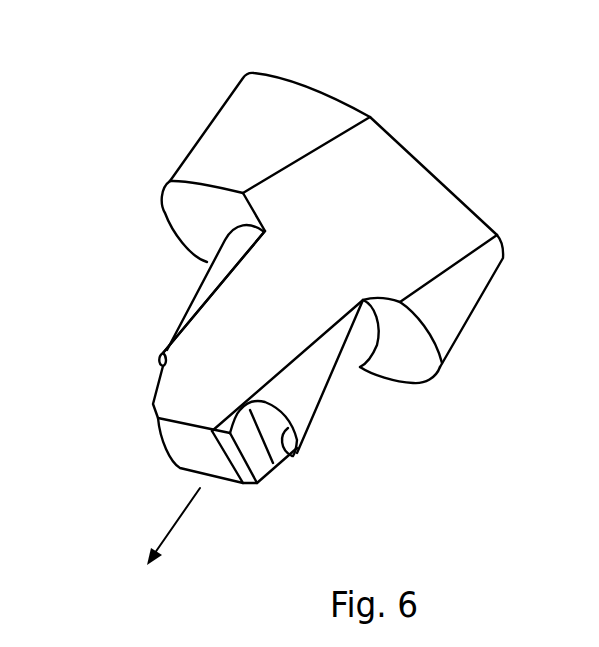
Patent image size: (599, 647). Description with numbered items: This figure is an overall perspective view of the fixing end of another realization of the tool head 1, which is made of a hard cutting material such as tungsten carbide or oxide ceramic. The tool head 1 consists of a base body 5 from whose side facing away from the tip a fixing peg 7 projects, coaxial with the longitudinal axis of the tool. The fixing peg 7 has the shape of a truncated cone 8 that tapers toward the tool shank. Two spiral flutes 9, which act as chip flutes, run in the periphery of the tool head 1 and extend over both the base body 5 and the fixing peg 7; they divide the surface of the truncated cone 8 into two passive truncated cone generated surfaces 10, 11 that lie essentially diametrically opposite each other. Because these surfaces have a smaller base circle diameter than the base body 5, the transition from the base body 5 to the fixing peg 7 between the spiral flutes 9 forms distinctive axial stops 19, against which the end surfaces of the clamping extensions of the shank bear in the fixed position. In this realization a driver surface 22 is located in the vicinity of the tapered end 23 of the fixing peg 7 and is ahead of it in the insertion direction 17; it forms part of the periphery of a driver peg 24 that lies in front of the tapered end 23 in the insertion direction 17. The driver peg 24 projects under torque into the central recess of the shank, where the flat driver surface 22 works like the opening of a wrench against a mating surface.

The tool head 1 is at (301, 264).
The base body 5 is at (272, 138).
The fixing peg 7 is at (187, 303).
The truncated cone 8 is at (327, 416).
The spiral flutes 9 is at (352, 242).
The truncated cone generated surface 10 is at (208, 282).
The truncated cone generated surface 11 is at (317, 375).
The insertion direction 17 is at (183, 512).
The axial stops 19 is at (203, 207).
The driver surface 22 is at (252, 452).
The tapered end 23 is at (160, 360).
The driver peg 24 is at (148, 388).